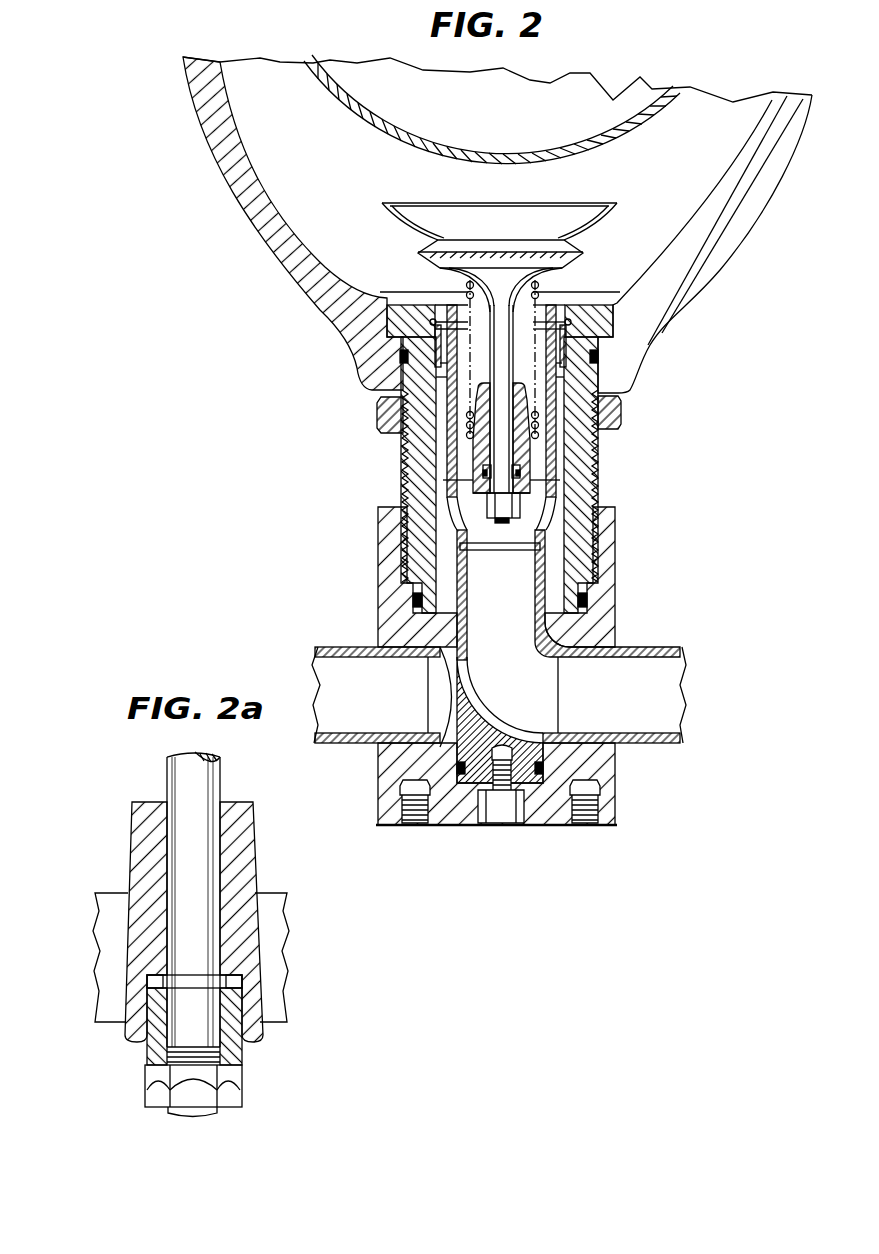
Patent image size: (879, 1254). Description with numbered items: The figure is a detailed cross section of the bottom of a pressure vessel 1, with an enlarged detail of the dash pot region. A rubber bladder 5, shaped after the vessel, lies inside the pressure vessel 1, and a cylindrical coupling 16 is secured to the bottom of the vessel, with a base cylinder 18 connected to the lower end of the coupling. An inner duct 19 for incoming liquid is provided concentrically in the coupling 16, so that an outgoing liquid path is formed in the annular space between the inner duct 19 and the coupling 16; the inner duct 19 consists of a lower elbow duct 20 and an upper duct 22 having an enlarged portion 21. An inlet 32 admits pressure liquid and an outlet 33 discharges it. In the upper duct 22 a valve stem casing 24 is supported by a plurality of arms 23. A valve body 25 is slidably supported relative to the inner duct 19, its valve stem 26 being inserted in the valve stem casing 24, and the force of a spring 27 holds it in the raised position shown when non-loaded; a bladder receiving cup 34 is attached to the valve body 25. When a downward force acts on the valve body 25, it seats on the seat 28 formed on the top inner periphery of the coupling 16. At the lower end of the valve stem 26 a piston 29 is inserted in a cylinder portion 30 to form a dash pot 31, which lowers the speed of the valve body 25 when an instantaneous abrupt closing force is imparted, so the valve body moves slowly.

In FIG. 2, the pressure vessel 1 is at (731, 260).
In FIG. 2, the bladder 5 is at (618, 140).
In FIG. 2, the cylindrical coupling 16 is at (582, 482).
In FIG. 2, the base cylinder 18 is at (455, 813).
In FIG. 2, the inner duct 19 is at (613, 407).
In FIG. 2, the lower elbow duct 20 is at (543, 593).
In FIG. 2, the enlarged portion 21 is at (558, 457).
In FIG. 2, the upper duct 22 is at (620, 422).
In FIG. 2, the arms 23 is at (462, 453).
In FIG. 2a, the arms 23 is at (108, 926).
In FIG. 2, the valve stem casing 24 is at (482, 408).
In FIG. 2, the valve body 25 is at (418, 252).
In FIG. 2, the valve stem 26 is at (502, 367).
In FIG. 2a, the valve stem 26 is at (187, 842).
In FIG. 2, the spring 27 is at (537, 378).
In FIG. 2, the seat 28 is at (568, 318).
In FIG. 2, the piston 29 is at (490, 495).
In FIG. 2a, the piston 29 is at (148, 1055).
In FIG. 2, the cylinder portion 30 is at (486, 470).
In FIG. 2a, the cylinder portion 30 is at (232, 988).
In FIG. 2, the dash pot 31 is at (470, 493).
In FIG. 2a, the dash pot 31 is at (157, 987).
In FIG. 2, the inlet 32 is at (660, 648).
In FIG. 2, the outlet 33 is at (340, 650).
In FIG. 2, the bladder receiving cup 34 is at (586, 213).